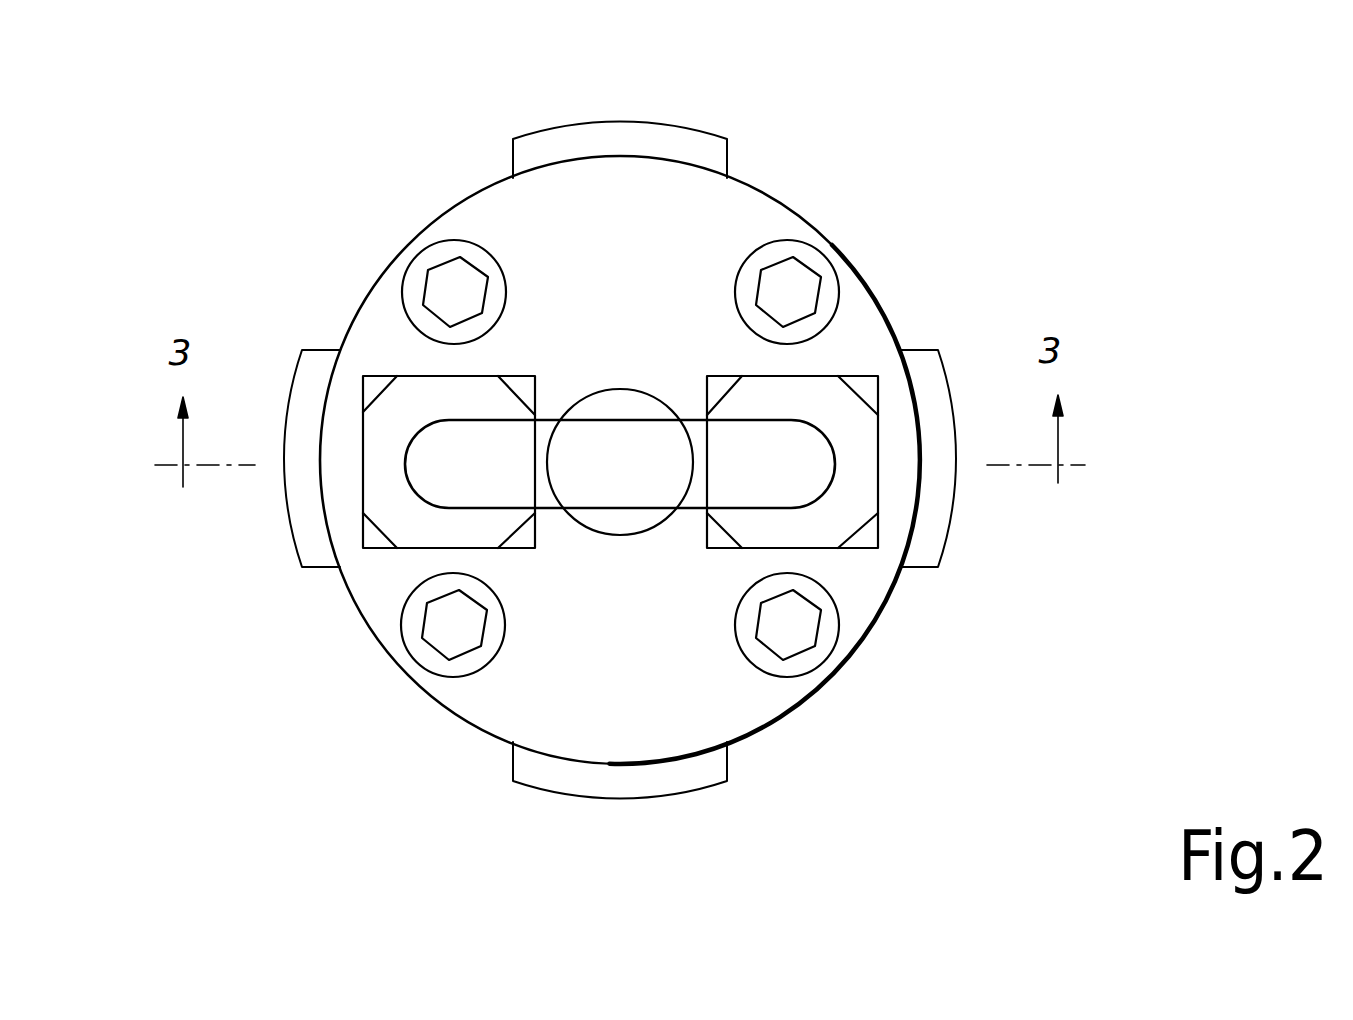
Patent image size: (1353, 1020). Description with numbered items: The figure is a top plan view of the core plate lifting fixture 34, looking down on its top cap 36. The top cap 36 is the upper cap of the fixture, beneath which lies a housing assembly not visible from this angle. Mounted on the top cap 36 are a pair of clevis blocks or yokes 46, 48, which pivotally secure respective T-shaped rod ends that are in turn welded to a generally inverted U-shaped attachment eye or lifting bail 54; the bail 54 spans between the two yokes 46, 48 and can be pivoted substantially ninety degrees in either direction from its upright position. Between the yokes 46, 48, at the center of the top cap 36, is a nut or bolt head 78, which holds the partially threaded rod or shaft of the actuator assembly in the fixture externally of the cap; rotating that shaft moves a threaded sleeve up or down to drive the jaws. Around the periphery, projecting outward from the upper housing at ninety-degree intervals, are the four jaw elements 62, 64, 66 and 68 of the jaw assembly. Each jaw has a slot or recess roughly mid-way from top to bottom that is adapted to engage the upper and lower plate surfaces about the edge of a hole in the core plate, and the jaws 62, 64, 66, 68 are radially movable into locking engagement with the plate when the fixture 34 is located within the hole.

The core plate lifting fixture 34 is at (912, 159).
The top cap 36 is at (483, 208).
The clevis block 46 is at (555, 365).
The clevis block 48 is at (850, 355).
The lifting bail 54 is at (690, 488).
The jaw element 62 is at (550, 778).
The jaw element 64 is at (313, 362).
The jaw element 66 is at (678, 143).
The jaw element 68 is at (938, 512).
The bolt head 78 is at (622, 397).